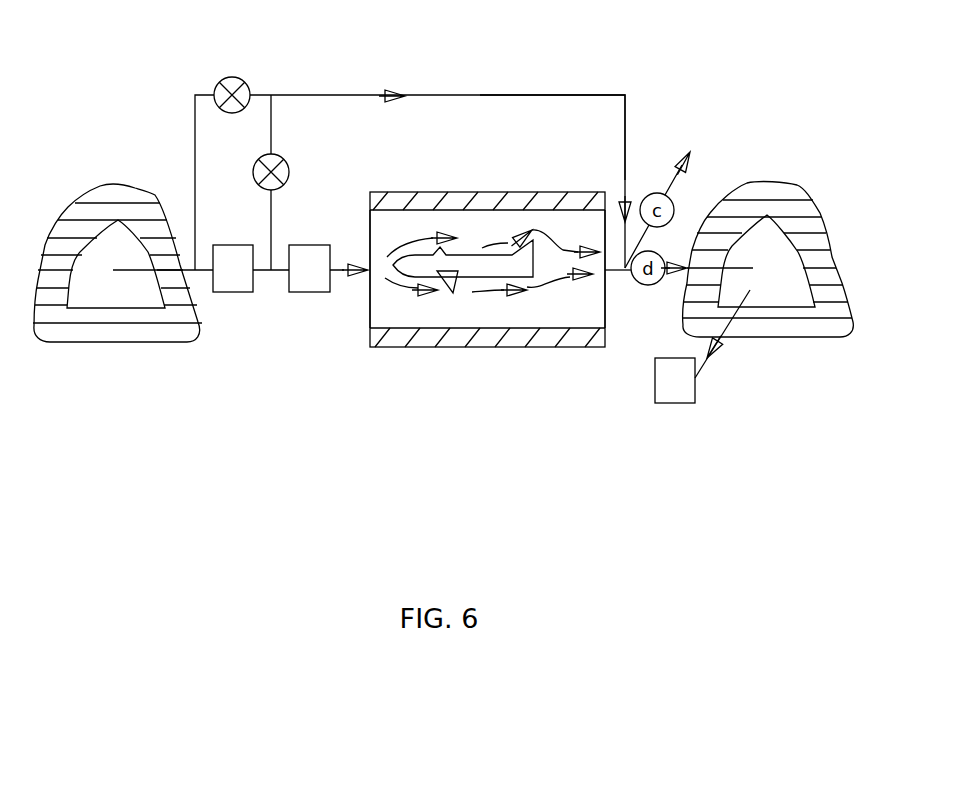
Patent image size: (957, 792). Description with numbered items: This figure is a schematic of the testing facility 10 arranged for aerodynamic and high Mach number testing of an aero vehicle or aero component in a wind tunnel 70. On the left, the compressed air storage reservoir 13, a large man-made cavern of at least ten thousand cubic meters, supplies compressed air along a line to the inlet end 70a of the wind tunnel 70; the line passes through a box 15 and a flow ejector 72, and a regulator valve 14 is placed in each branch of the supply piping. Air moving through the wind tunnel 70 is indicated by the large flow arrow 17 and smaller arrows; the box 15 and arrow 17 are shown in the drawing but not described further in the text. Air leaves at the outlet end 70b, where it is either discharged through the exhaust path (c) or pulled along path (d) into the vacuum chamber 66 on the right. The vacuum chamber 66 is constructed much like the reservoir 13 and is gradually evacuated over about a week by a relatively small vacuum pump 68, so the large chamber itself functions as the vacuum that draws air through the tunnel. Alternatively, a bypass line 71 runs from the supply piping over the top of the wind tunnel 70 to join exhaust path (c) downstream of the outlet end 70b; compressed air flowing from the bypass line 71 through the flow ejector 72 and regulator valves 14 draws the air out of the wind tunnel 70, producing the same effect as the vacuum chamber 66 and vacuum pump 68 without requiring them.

The testing facility 10 is at (127, 67).
The compressed air storage reservoir 13 is at (92, 288).
The regulator valve 14 is at (220, 90).
The processing unit 15 is at (237, 283).
The fluid flow 17 is at (475, 263).
The vacuum chamber 66 is at (777, 292).
The vacuum pump 68 is at (678, 392).
The wind tunnel 70 is at (408, 313).
The inlet end 70a is at (370, 305).
The outlet end 70b is at (605, 305).
The bypass line 71 is at (577, 93).
The flow ejector 72 is at (310, 283).